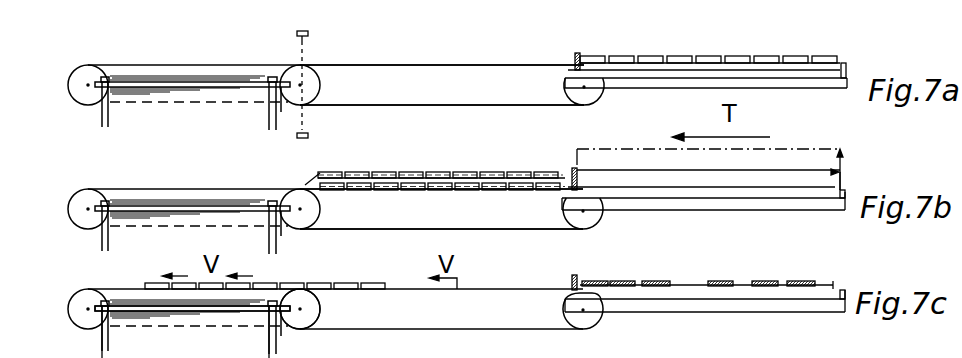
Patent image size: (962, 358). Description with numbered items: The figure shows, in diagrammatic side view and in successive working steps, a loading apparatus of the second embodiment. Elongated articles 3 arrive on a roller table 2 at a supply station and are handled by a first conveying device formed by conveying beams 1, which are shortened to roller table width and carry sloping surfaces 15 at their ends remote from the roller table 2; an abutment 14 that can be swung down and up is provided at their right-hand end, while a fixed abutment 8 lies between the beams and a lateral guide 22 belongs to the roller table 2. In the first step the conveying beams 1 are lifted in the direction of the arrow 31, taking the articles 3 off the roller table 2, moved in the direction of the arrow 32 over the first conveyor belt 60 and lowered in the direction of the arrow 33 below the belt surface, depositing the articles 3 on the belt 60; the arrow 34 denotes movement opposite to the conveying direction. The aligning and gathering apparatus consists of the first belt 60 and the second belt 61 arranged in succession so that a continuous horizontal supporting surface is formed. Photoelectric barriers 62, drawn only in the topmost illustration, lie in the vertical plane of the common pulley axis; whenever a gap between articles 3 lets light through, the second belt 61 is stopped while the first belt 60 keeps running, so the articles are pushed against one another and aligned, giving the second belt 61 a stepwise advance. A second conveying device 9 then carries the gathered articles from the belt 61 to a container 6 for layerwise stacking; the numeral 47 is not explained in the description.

In FIG. 7A, the conveying beams 1 is at (826, 84).
In FIG. 7B, the conveying beams 1 is at (749, 210).
In FIG. 7C, the conveying beams 1 is at (705, 301).
In FIG. 7A, the roller table 2 is at (766, 64).
In FIG. 7B, the roller table 2 is at (667, 188).
In FIG. 7C, the roller table 2 is at (706, 285).
In FIG. 7A, the elongated articles 3 is at (697, 63).
In FIG. 7B, the elongated articles 3 is at (435, 181).
In FIG. 7C, the elongated articles 3 is at (480, 285).
In FIG. 7A, the abutment 8 is at (574, 56).
In FIG. 7C, the abutment 8 is at (574, 282).
In FIG. 7A, the abutment 14 is at (847, 70).
In FIG. 7B, the abutment 14 is at (842, 194).
In FIG. 7C, the abutment 14 is at (842, 294).
In FIG. 7A, the lateral guide 22 is at (592, 74).
In FIG. 7B, the lateral guide 22 is at (583, 213).
In FIG. 7C, the lateral guide 22 is at (583, 314).
In FIG. 7B, the arrow 31 is at (843, 150).
In FIG. 7B, the arrow 32 is at (599, 141).
In FIG. 7B, the arrow 33 is at (575, 167).
In FIG. 7B, the arrow 34 is at (836, 172).
In FIG. 7A, the first conveyor belt 60 is at (437, 65).
In FIG. 7B, the first conveyor belt 60 is at (503, 190).
In FIG. 7C, the first conveyor belt 60 is at (335, 309).
In FIG. 7A, the second conveyor belt 61 is at (200, 65).
In FIG. 7B, the second conveyor belt 61 is at (190, 189).
In FIG. 7A, the photoelectric barriers 62 is at (310, 43).
In FIG. 7C, the container 6 is at (134, 332).
In FIG. 7C, the support shelf 47 is at (192, 332).
In FIG. 7C, the second conveying device 9 is at (279, 332).
In FIG. 7C, the sloping surfaces 15 is at (300, 323).